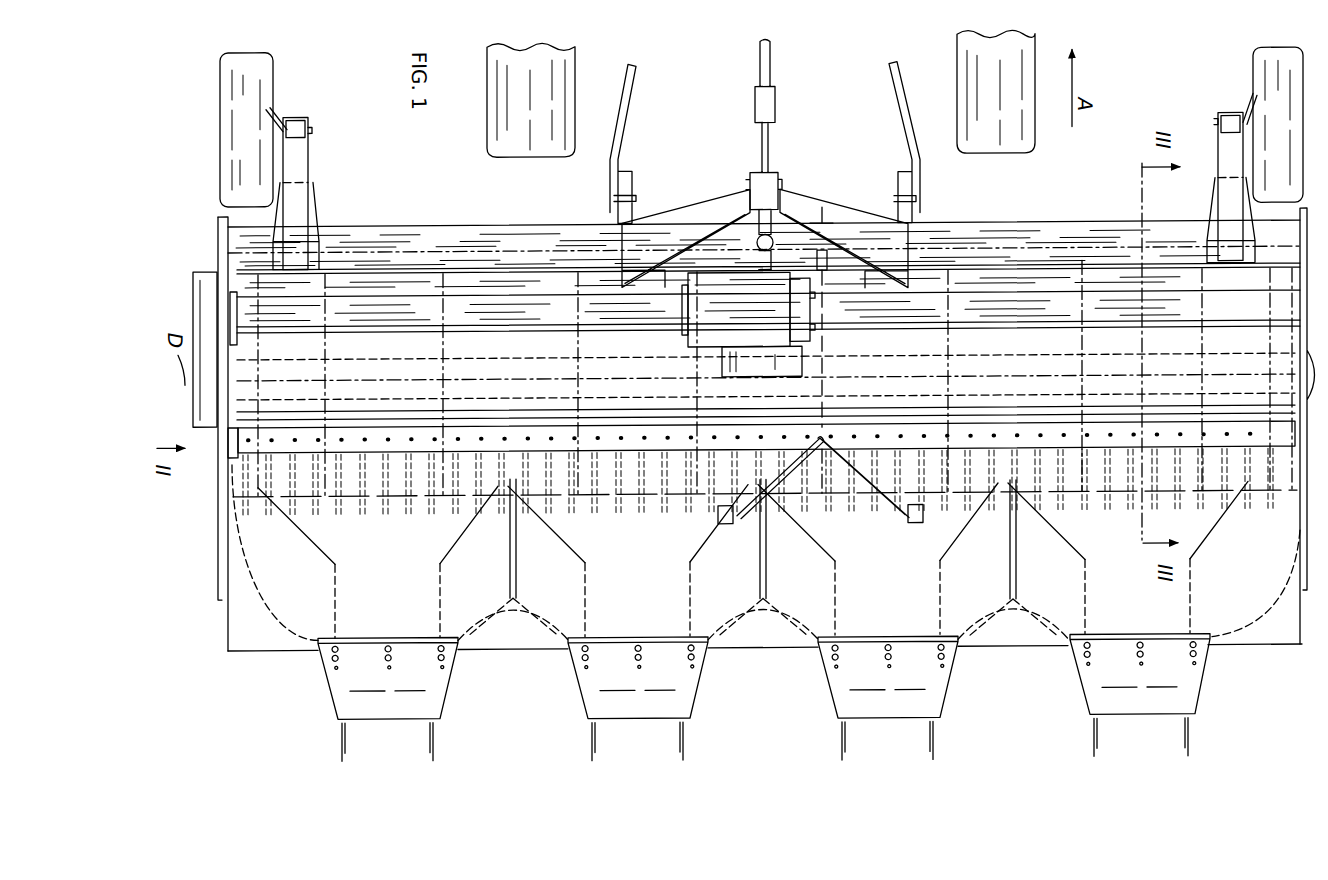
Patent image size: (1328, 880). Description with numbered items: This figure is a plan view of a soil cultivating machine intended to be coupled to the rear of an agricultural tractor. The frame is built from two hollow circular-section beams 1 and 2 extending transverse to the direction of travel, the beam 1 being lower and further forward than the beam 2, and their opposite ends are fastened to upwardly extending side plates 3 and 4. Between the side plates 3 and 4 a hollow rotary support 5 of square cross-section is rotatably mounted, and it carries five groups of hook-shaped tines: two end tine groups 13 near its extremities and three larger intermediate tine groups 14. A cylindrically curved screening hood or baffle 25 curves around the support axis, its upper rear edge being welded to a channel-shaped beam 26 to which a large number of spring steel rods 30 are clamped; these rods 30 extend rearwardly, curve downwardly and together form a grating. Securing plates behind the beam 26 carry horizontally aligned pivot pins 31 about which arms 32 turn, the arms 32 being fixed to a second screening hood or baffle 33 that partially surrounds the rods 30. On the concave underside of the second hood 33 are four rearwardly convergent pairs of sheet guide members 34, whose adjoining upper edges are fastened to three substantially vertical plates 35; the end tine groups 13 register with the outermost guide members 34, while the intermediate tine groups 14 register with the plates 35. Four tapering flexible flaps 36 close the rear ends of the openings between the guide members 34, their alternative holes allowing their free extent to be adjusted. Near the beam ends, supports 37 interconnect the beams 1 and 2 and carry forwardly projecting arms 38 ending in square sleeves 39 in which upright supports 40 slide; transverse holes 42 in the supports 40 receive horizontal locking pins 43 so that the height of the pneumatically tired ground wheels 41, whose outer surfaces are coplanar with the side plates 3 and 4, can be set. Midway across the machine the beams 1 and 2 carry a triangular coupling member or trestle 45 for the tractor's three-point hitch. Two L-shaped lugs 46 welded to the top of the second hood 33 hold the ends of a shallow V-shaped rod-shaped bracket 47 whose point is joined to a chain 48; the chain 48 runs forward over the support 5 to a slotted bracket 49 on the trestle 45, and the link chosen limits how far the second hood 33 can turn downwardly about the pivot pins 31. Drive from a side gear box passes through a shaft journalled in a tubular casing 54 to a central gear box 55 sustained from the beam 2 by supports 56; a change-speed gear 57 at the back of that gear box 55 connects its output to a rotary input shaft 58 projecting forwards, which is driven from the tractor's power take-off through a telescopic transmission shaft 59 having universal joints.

The frame beam 1 is at (1123, 236).
The frame beam 2 is at (1068, 281).
The side plate 3 is at (1295, 458).
The side plate 4 is at (218, 590).
The hollow support 5 is at (1035, 361).
The tine groups 13 is at (312, 345).
The tine groups 14 is at (474, 379).
The screening hood or baffle 25 is at (997, 325).
The channel-shaped beam 26 is at (275, 455).
The spring steel rods 30 is at (362, 514).
The pivot pins 31 is at (226, 454).
The arms 32 is at (226, 500).
The second screening hood or baffle 33 is at (763, 631).
The guide members 34 is at (336, 592).
The vertical plates 35 is at (523, 555).
The flexible flaps 36 is at (343, 710).
The supports 37 is at (318, 243).
The arms 38 is at (305, 140).
The sleeves 39 is at (298, 125).
The upright supports 40 is at (312, 130).
The ground wheels 41 is at (272, 110).
The transverse holes 42 is at (205, 285).
The locking pins 43 is at (270, 110).
The coupling member or trestle 45 is at (884, 222).
The lugs 46 is at (918, 529).
The rod-shaped bracket 47 is at (878, 509).
The chain 48 is at (823, 357).
The slotted bracket 49 is at (824, 216).
The tubular casing 54 is at (485, 312).
The gear box 55 is at (715, 288).
The supports 56 is at (808, 304).
The change-speed gear 57 is at (750, 360).
The rotary input shaft 58 is at (766, 275).
The telescopic transmission shaft 59 is at (762, 58).